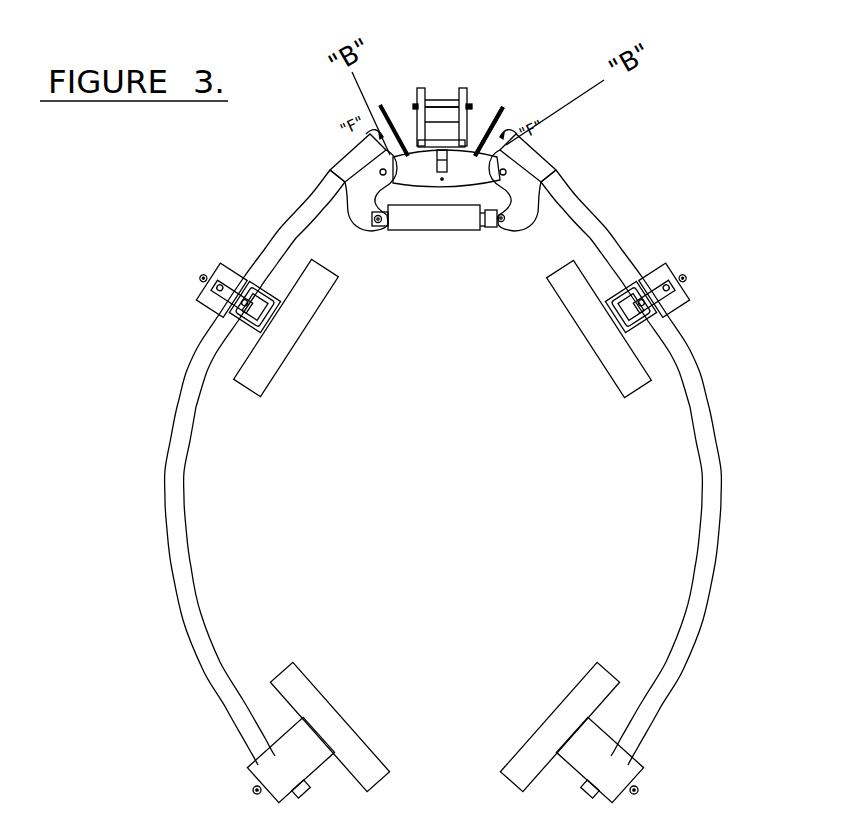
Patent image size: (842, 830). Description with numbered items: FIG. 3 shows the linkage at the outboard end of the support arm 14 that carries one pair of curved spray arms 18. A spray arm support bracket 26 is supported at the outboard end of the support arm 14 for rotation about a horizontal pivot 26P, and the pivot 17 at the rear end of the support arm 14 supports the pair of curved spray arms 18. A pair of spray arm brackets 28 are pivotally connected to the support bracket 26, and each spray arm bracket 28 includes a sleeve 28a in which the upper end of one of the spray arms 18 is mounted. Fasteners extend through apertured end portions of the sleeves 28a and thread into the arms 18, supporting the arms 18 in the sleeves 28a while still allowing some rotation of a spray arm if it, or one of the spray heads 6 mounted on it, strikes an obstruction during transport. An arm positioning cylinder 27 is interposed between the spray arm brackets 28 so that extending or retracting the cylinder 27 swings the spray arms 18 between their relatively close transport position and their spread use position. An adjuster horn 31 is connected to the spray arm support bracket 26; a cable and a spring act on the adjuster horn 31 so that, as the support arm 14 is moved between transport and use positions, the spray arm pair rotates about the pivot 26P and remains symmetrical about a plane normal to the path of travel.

The spray heads 6 is at (283, 327).
The support arm 14 is at (440, 100).
The pivot 17 is at (470, 107).
The curved spray arms 18 is at (178, 476).
The spray arm support bracket 26 is at (413, 170).
The horizontal pivot 26P is at (443, 143).
The arm positioning cylinder 27 is at (447, 218).
The spray arm brackets 28 is at (360, 204).
The sleeve 28a is at (358, 162).
The adjuster horn 31 is at (503, 107).